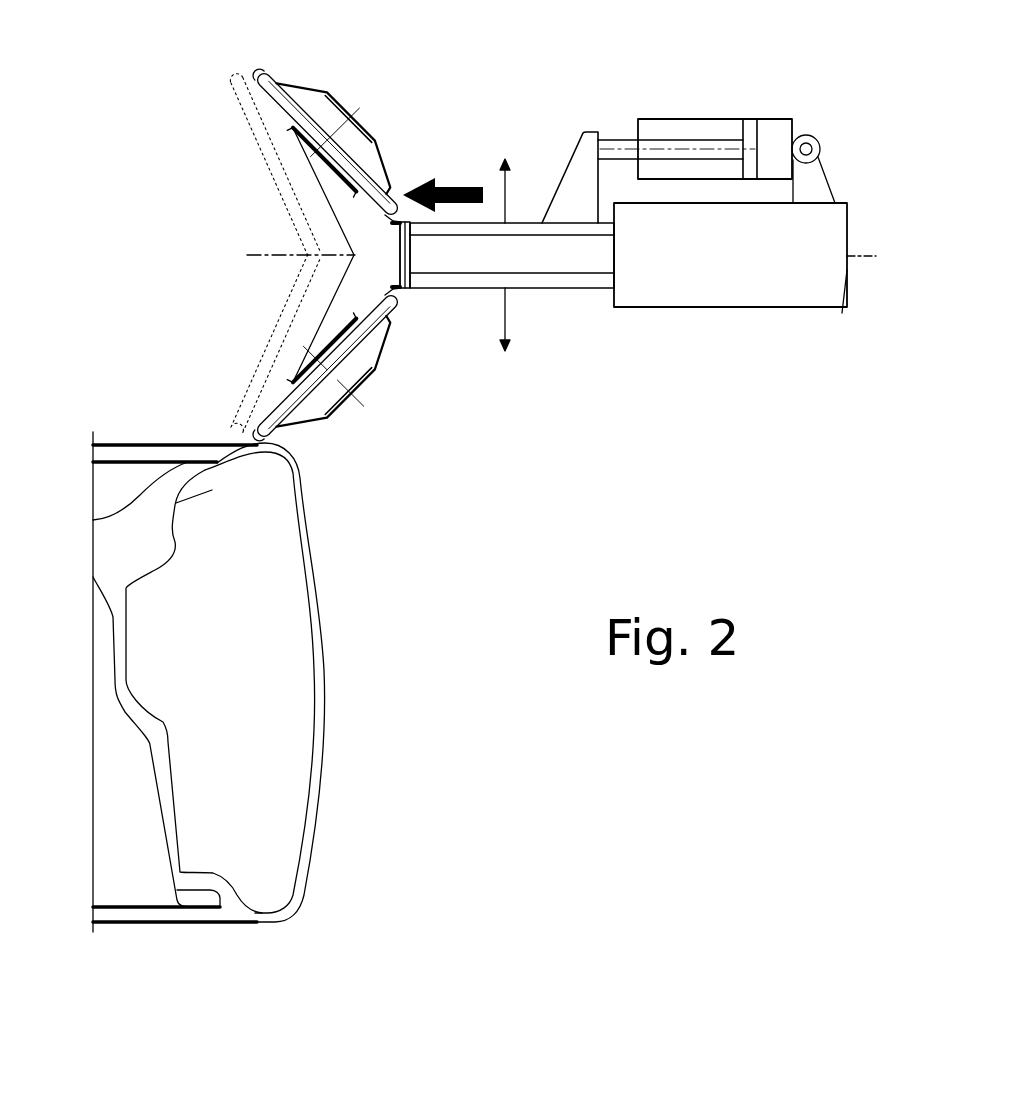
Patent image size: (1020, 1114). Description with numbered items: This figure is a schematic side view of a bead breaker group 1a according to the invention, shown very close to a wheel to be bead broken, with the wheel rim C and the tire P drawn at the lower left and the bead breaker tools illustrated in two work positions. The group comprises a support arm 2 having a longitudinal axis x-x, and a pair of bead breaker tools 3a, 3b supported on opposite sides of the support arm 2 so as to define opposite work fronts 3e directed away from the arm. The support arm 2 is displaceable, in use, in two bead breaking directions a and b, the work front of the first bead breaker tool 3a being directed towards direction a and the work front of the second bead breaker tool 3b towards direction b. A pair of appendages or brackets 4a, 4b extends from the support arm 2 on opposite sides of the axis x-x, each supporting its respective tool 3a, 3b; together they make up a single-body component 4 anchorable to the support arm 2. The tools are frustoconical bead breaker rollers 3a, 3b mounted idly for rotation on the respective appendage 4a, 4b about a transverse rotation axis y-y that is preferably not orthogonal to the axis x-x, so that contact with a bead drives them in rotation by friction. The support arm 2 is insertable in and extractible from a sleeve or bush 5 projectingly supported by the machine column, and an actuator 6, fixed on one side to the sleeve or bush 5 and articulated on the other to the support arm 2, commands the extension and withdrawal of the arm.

The bead breaker group 1a is at (458, 343).
The support arm 2 is at (528, 288).
The first bead breaker tool 3a is at (387, 347).
The second bead breaker tool 3b is at (388, 180).
The work fronts 3e is at (268, 76).
The single-body component 4 is at (337, 222).
The appendage or bracket 4a is at (343, 298).
The appendage or bracket 4b is at (333, 182).
The sleeve or bush 5 is at (643, 307).
The actuator 6 is at (696, 119).
The wheel rim C is at (175, 442).
The tire P is at (324, 680).
The bead breaking direction a is at (493, 382).
The bead breaking direction b is at (493, 154).
The longitudinal axis x is at (559, 254).
The transverse rotation axis y is at (333, 368).